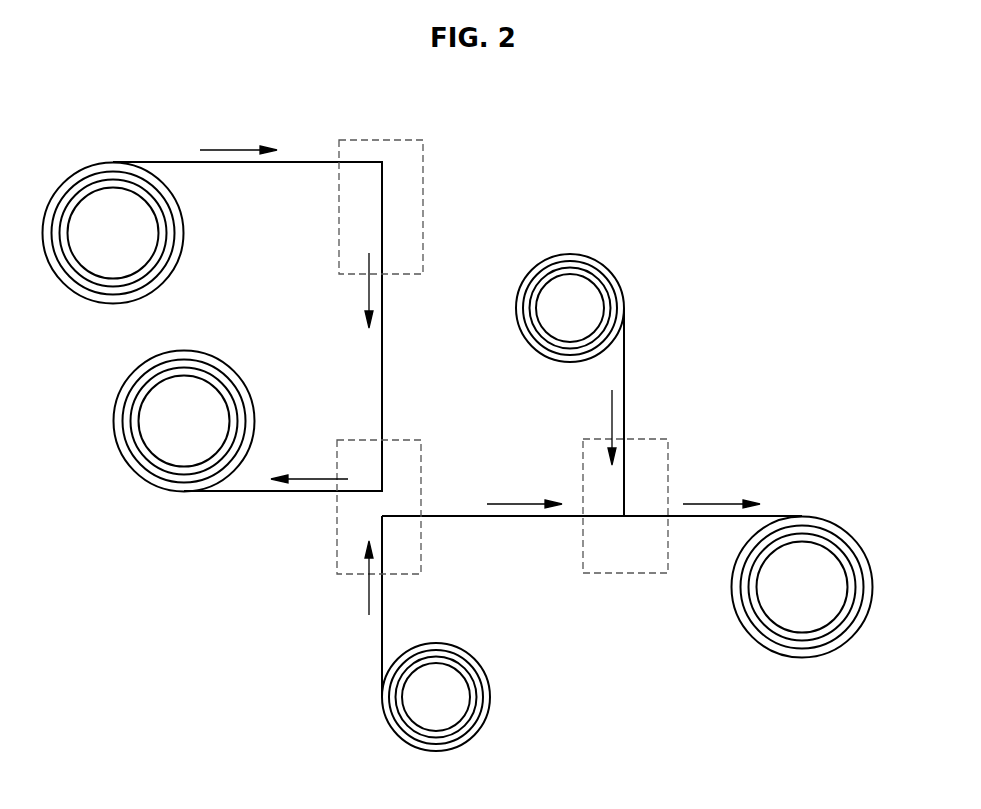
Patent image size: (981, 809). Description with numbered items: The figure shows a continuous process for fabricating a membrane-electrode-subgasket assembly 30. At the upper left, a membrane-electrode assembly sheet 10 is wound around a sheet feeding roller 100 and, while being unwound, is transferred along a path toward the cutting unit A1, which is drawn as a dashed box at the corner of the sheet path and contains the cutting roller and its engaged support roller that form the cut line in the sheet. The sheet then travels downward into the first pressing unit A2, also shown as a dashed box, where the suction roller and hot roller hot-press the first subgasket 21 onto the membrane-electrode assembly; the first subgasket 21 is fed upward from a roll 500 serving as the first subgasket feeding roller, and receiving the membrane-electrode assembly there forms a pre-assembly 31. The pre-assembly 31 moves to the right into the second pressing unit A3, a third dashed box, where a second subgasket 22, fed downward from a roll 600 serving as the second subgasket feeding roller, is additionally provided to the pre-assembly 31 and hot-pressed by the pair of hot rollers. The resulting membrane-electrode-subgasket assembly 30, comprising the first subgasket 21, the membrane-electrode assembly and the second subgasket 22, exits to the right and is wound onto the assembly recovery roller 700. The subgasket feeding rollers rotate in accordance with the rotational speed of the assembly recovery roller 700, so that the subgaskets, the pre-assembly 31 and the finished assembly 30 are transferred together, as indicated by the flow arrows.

The membrane-electrode assembly sheet 10 is at (300, 162).
The sheet feeding roller 100 is at (180, 258).
The first subgasket 21 is at (382, 640).
The second subgasket 22 is at (624, 370).
The membrane-electrode-subgasket assembly 30 is at (700, 517).
The pre-assembly 31 is at (507, 517).
The second material roll 500 is at (490, 696).
The third material roll 600 is at (568, 254).
The assembly recovery roller 700 is at (843, 528).
The cutting unit A1 is at (339, 215).
The first pressing unit A2 is at (337, 539).
The second pressing unit A3 is at (625, 575).